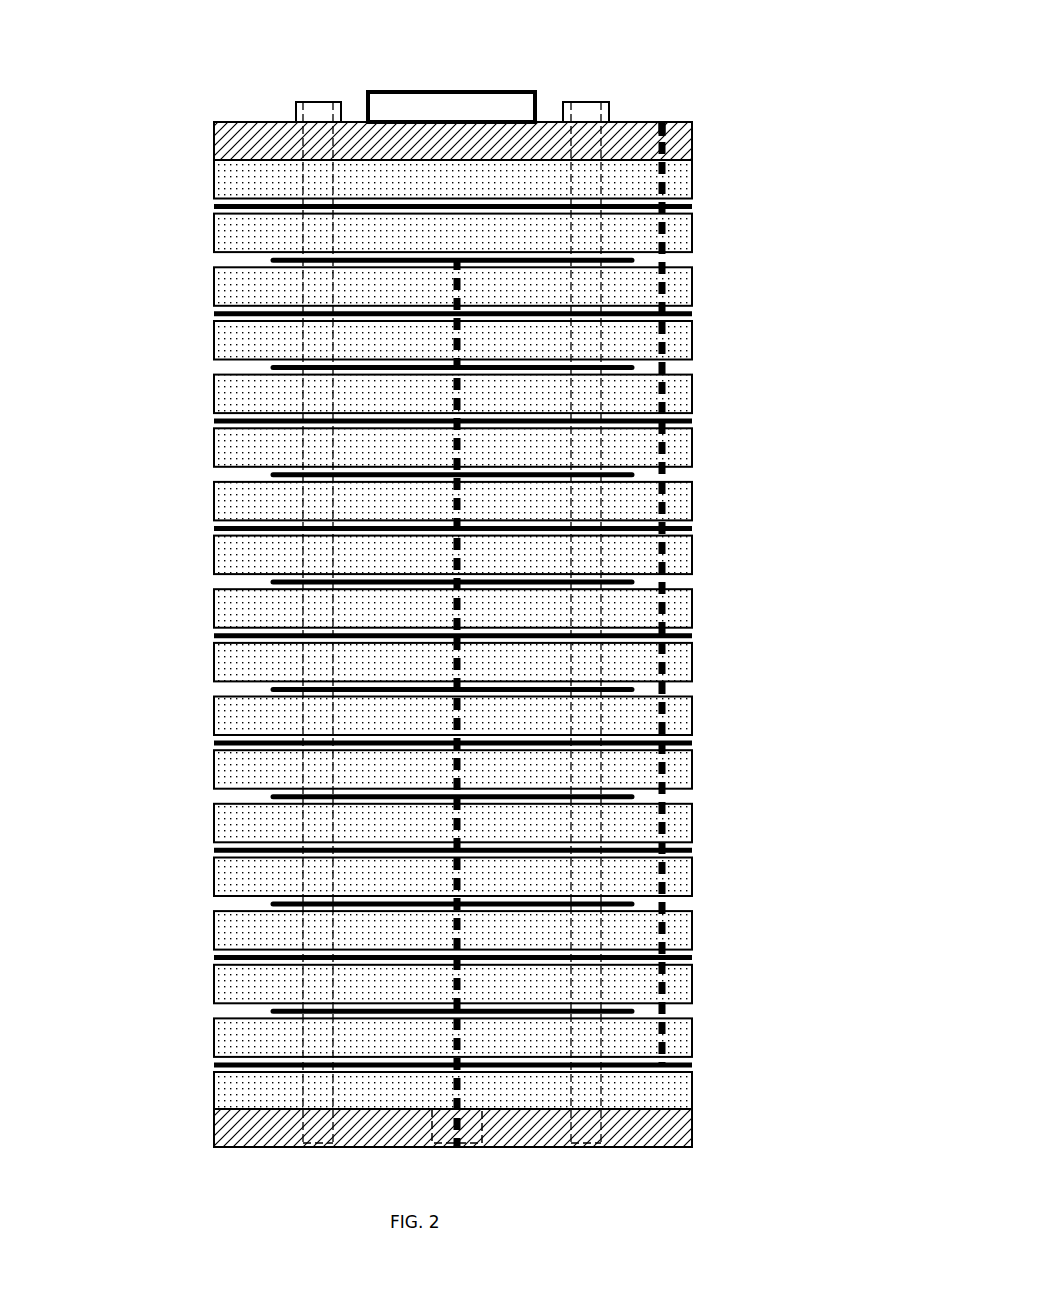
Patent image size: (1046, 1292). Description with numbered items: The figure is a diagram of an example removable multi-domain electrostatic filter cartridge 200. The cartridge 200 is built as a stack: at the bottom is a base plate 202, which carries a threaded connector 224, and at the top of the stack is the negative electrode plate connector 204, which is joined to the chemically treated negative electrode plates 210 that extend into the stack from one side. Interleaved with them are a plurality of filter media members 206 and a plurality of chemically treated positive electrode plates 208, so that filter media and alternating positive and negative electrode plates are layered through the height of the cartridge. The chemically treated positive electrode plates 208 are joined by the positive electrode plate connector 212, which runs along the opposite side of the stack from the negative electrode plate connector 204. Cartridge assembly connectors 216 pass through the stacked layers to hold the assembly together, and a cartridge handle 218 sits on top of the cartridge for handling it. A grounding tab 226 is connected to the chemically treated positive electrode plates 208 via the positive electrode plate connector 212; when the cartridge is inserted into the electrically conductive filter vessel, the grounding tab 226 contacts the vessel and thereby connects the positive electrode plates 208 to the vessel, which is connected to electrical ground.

The removable multi-domain electrostatic filter cartridge 200 is at (170, 109).
The base plate 202 is at (213, 1135).
The negative electrode plate connector 204 is at (693, 135).
The filter media members 206 is at (213, 452).
The chemically treated positive electrode plates 208 is at (692, 312).
The chemically treated negative electrode plates 210 is at (273, 260).
The positive electrode plate connector 212 is at (662, 253).
The cartridge assembly connectors 216 is at (312, 101).
The cartridge handle 218 is at (440, 91).
The threaded connector 224 is at (483, 1122).
The grounding tab 226 is at (662, 123).